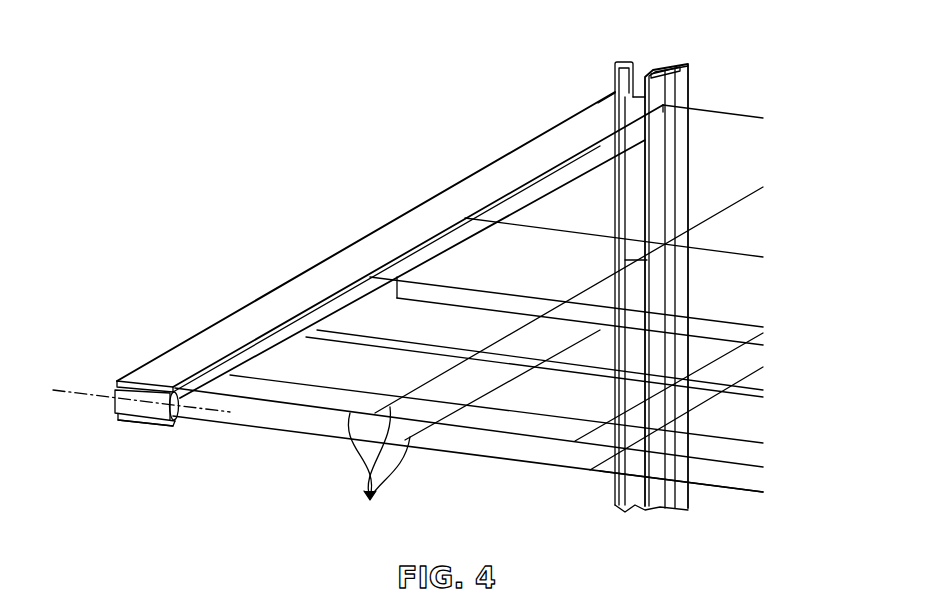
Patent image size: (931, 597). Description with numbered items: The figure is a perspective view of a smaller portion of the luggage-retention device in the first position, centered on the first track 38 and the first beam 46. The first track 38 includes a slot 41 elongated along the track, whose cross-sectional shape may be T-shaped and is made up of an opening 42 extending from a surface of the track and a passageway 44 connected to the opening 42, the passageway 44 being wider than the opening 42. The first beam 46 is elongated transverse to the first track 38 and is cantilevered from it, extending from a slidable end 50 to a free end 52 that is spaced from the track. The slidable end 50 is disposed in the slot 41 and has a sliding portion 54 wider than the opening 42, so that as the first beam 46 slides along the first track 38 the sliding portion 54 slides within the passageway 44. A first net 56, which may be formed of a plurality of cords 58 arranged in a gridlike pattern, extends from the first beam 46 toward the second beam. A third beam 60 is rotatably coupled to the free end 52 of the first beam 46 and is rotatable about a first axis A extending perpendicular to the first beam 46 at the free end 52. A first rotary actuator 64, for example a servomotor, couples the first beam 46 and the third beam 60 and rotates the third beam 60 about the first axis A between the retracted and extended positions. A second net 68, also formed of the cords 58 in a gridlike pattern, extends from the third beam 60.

The first track 38 is at (689, 78).
The slot 41 is at (622, 484).
The opening 42 is at (615, 90).
The passageway 44 is at (627, 66).
The first beam 46 is at (394, 218).
The slidable end 50 is at (595, 101).
The free end 52 is at (130, 372).
The sliding portion 54 is at (637, 80).
The first net 56 is at (745, 115).
The cords 58 is at (379, 469).
The third beam 60 is at (368, 310).
The first rotary actuator 64 is at (140, 421).
The second net 68 is at (485, 457).
The first axis A is at (65, 393).